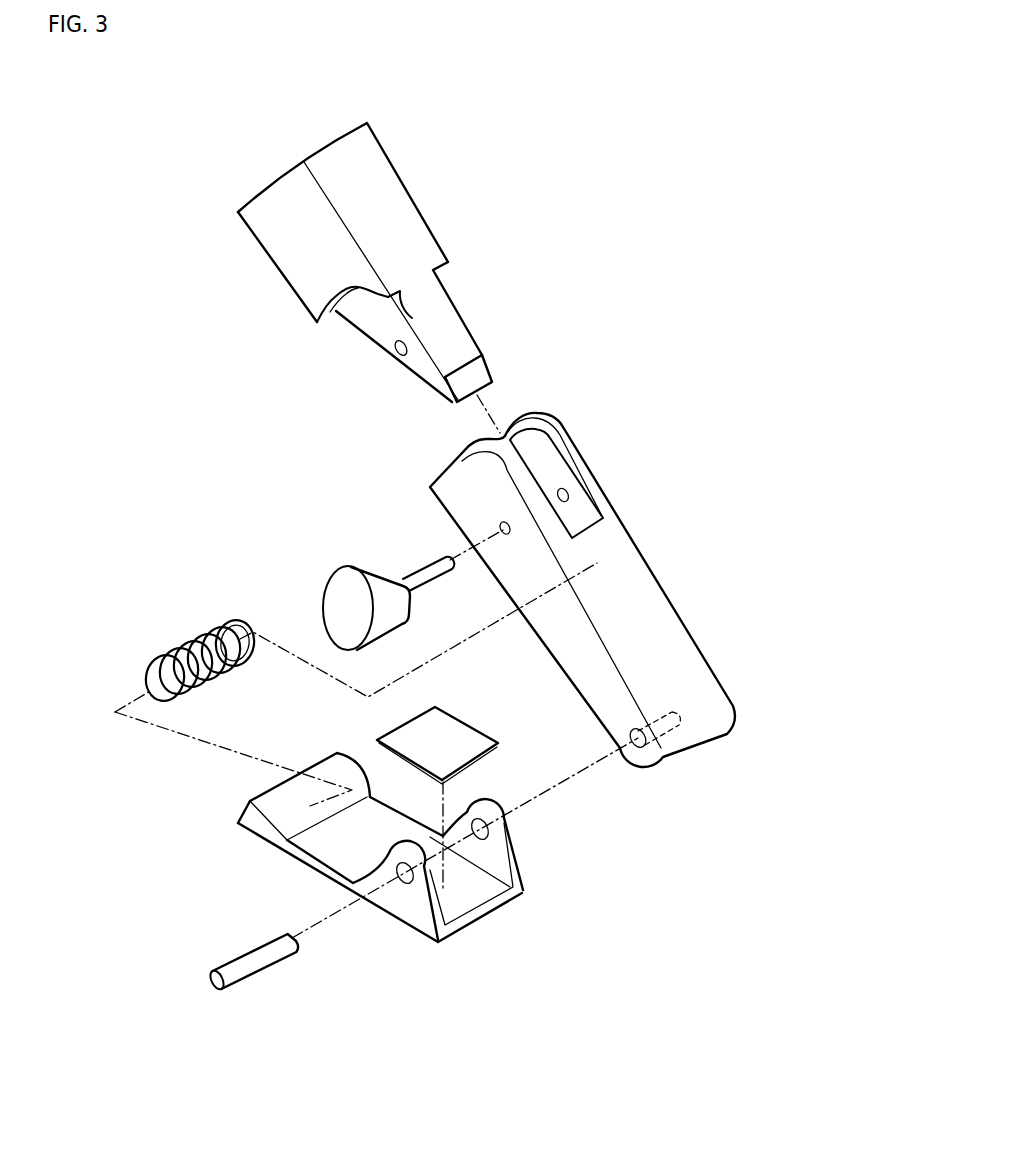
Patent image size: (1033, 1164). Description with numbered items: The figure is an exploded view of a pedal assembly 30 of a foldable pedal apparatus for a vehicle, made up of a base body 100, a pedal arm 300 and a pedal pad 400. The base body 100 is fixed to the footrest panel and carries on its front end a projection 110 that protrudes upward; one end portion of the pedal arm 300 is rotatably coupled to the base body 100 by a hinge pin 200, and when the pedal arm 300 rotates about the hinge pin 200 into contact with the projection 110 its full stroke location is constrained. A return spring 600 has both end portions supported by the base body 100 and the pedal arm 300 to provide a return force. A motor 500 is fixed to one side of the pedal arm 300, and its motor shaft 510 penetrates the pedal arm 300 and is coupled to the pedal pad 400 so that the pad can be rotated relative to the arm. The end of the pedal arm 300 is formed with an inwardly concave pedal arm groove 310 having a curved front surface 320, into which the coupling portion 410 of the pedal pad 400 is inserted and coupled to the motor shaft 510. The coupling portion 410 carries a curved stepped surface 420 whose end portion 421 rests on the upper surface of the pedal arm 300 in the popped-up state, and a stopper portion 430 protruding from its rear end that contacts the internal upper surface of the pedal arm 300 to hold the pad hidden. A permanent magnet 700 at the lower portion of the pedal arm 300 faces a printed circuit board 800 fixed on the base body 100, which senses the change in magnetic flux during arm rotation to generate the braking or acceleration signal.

The pedal assembly 30 is at (637, 334).
The base body 100 is at (403, 903).
The projection 110 is at (278, 795).
The hinge pin 200 is at (260, 960).
The pedal arm 300 is at (660, 613).
The pedal arm groove 310 is at (545, 472).
The front surface 320 is at (505, 425).
The pedal pad 400 is at (288, 193).
The coupling portion 410 is at (367, 317).
The stepped surface 420 is at (333, 304).
The end portion 421 is at (412, 318).
The stopper portion 430 is at (477, 376).
The motor 500 is at (362, 580).
The motor shaft 510 is at (420, 578).
The return spring 600 is at (195, 640).
The permanent magnet 700 is at (674, 728).
The printed circuit board 800 is at (465, 738).